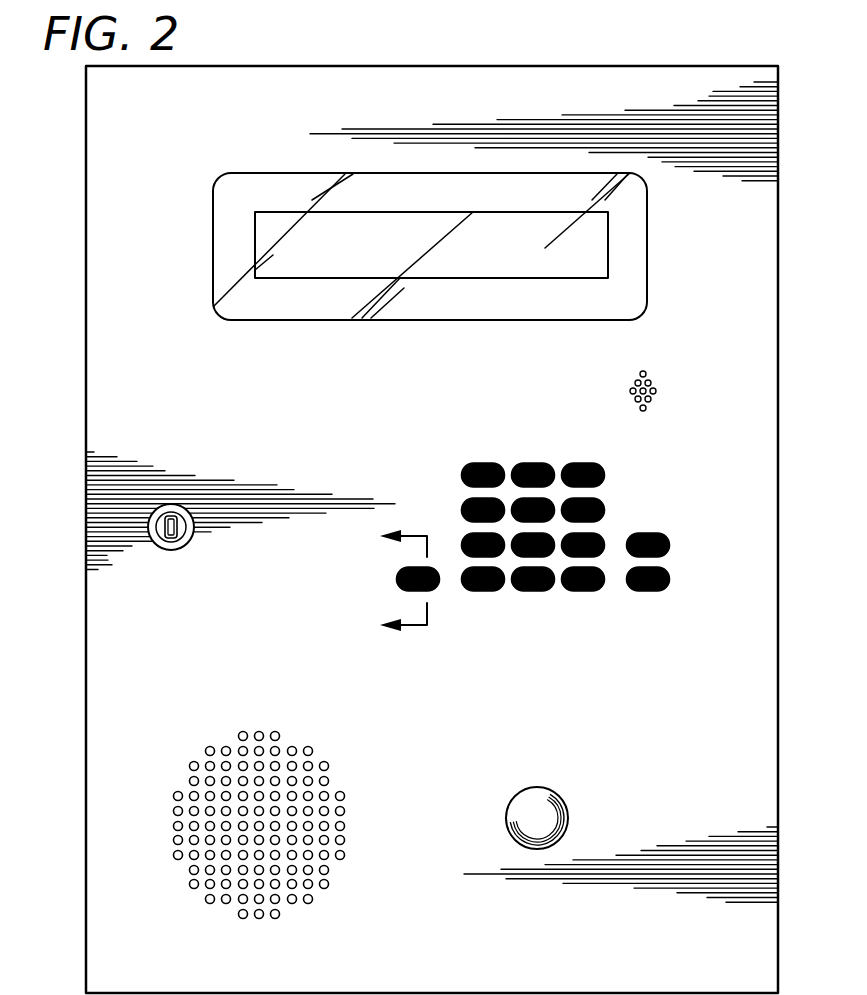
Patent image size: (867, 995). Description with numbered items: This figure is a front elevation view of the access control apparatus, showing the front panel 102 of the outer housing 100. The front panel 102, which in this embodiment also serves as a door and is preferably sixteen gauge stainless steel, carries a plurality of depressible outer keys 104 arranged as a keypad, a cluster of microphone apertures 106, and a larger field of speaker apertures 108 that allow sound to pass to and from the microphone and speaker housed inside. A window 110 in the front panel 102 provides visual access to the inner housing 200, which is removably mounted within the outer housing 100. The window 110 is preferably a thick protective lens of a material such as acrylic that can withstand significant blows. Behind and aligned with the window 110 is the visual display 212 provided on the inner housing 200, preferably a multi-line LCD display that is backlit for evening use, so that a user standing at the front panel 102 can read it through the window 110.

The outer housing 100 is at (68, 341).
The front panel 102 is at (752, 578).
The depressible outer keys 104 is at (620, 504).
The microphone apertures 106 is at (654, 374).
The speaker apertures 108 is at (346, 784).
The window 110 is at (647, 245).
The inner housing 200 is at (640, 207).
The visual display 212 is at (335, 265).